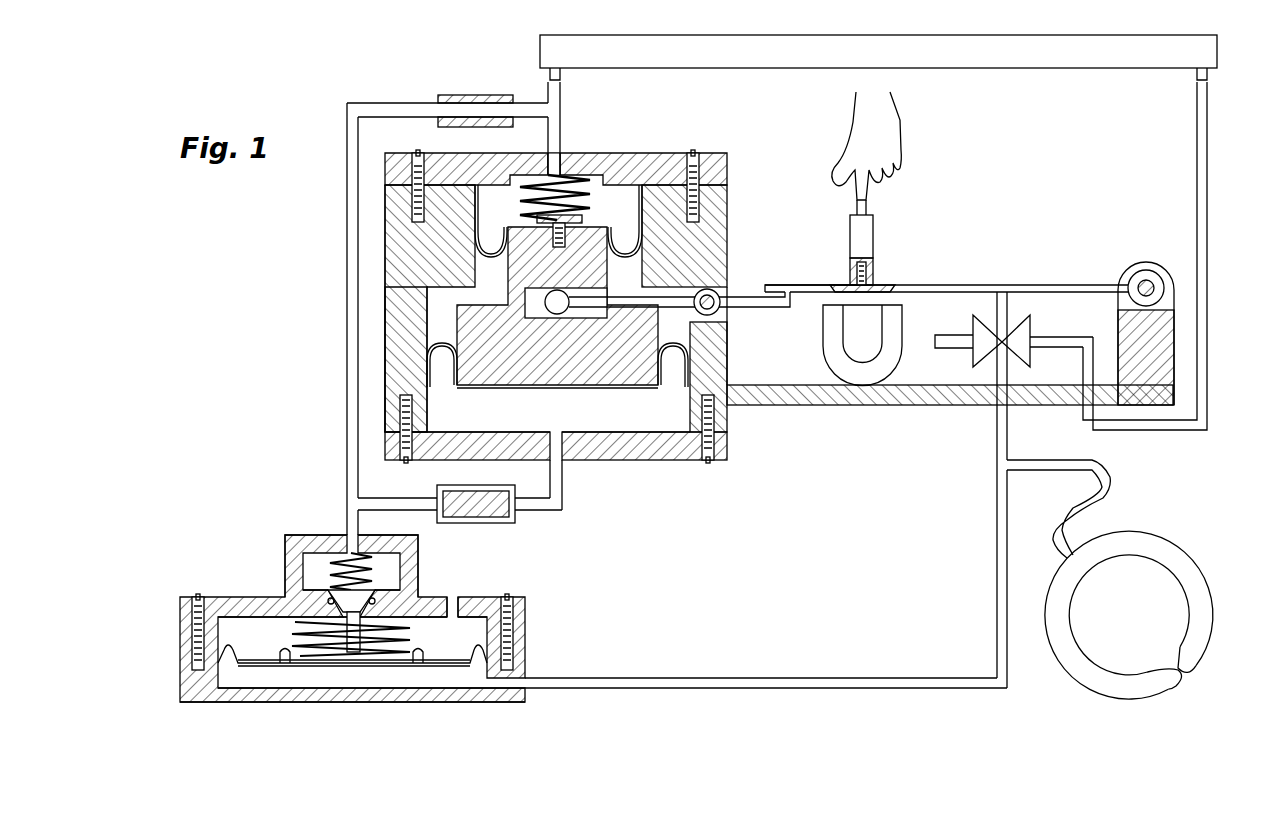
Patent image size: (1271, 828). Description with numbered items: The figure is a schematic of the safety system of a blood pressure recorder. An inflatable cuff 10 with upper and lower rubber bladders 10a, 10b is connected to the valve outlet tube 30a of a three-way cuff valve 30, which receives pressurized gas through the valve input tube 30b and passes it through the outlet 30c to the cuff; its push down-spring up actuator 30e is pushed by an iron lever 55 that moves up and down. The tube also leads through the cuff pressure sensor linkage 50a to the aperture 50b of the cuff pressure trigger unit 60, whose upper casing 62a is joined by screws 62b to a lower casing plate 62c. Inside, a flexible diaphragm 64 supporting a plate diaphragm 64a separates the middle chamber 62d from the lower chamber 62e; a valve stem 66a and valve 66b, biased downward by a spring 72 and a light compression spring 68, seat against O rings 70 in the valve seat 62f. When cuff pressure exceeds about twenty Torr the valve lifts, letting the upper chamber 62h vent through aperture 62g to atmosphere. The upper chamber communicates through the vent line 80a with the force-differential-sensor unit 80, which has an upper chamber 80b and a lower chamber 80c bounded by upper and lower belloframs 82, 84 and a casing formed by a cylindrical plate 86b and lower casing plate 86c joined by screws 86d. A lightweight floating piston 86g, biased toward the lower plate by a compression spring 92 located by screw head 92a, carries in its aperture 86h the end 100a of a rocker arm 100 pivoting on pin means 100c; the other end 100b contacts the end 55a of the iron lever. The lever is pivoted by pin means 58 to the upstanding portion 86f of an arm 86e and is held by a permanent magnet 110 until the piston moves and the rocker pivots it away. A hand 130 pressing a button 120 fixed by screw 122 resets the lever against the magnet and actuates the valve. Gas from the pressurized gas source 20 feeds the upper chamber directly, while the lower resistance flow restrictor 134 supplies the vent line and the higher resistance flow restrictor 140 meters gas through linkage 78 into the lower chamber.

The inflatable cuff 10 is at (1155, 618).
The upper rubber bladder 10a is at (1120, 698).
The lower rubber bladder 10b is at (1150, 545).
The pressurized gas source 20 is at (878, 57).
The 3-way cuff valve 30 is at (1022, 490).
The valve outlet tube 30a is at (997, 572).
The valve input tube 30b is at (1208, 272).
The outlet to the cuff 30c is at (1008, 448).
The valve actuator 30e is at (1010, 303).
The cuff pressure sensor linkage 50a is at (958, 676).
The aperture 50b is at (512, 683).
The iron lever 55 is at (946, 259).
The end of iron lever 55a is at (803, 285).
The pin means 58 is at (1146, 270).
The cuff pressure trigger unit 60 is at (381, 603).
The upper casing 62a is at (525, 618).
The screws 62b is at (203, 594).
The lower casing plate 62c is at (515, 705).
The middle chamber 62d is at (470, 634).
The lower chamber 62e is at (450, 690).
The valve seat 62f is at (328, 600).
The aperture 62g is at (455, 597).
The upper chamber 62h is at (313, 545).
The flexible diaphragm 64 is at (351, 688).
The plate diaphragm 64a is at (305, 666).
The valve stem 66a is at (370, 655).
The valve 66b is at (335, 598).
The light compression spring 68 is at (365, 568).
The O rings 70 is at (380, 600).
The spring 72 is at (302, 633).
The linkage 78 is at (562, 485).
The force-differential-sensor unit 80 is at (528, 311).
The vent line 80a is at (385, 380).
The upper chamber 80b is at (640, 190).
The lower chamber 80c is at (558, 416).
The upper bellofram 82 is at (488, 258).
The lower bellofram 84 is at (395, 343).
The cylindrical plate 86b is at (400, 236).
The lower casing plate 86c is at (650, 452).
The screws 86d is at (418, 150).
The arm 86e is at (790, 405).
The upstanding portion 86f is at (1165, 355).
The floating piston 86g is at (480, 375).
The aperture 86h is at (530, 325).
The compression spring 92 is at (570, 178).
The screw head 92a is at (548, 165).
The rocker arm 100 is at (588, 308).
The end of rocker arm 100a is at (555, 316).
The other end of rocker arm 100b is at (748, 295).
The pin means 100c is at (718, 337).
The permanent magnet 110 is at (825, 358).
The button 120 is at (885, 241).
The screw 122 is at (875, 268).
The hand 130 is at (900, 130).
The lower resistance flow restrictor 134 is at (450, 93).
The higher resistance flow restrictor 140 is at (505, 510).